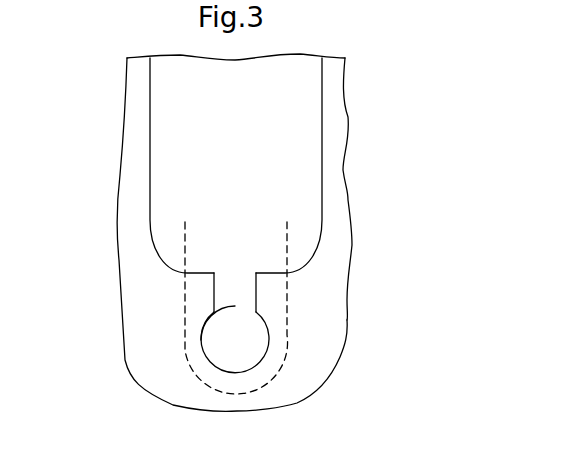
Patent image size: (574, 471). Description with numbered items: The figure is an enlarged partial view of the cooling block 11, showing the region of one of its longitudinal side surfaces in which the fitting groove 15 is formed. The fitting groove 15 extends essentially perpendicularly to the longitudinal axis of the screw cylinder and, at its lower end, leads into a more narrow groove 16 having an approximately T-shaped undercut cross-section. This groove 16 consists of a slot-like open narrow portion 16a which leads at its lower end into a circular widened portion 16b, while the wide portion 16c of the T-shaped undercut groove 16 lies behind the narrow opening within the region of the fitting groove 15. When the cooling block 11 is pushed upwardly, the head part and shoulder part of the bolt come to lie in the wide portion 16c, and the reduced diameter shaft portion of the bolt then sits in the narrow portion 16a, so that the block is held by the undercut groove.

The cooling block 11 is at (342, 226).
The fitting groove 15 is at (312, 157).
The groove having T-shaped undercut cross-section 16 is at (243, 292).
The narrow portion 16a is at (214, 285).
The circular widened portion 16b is at (235, 347).
The wide portion 16c is at (287, 232).